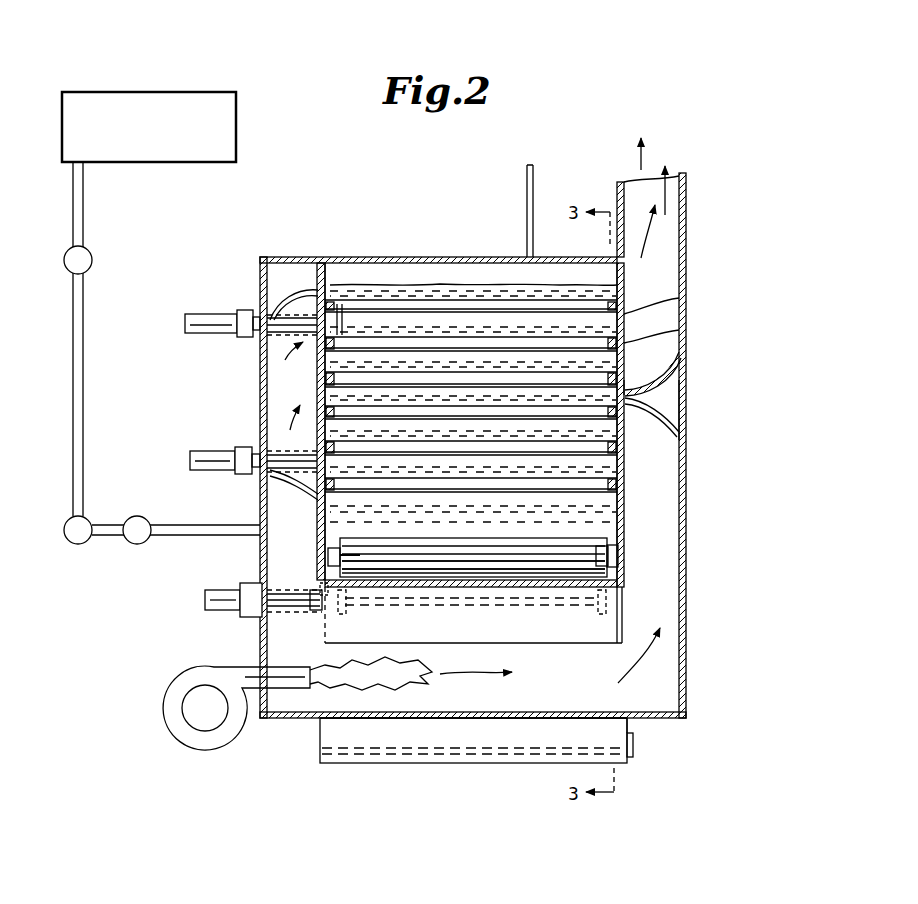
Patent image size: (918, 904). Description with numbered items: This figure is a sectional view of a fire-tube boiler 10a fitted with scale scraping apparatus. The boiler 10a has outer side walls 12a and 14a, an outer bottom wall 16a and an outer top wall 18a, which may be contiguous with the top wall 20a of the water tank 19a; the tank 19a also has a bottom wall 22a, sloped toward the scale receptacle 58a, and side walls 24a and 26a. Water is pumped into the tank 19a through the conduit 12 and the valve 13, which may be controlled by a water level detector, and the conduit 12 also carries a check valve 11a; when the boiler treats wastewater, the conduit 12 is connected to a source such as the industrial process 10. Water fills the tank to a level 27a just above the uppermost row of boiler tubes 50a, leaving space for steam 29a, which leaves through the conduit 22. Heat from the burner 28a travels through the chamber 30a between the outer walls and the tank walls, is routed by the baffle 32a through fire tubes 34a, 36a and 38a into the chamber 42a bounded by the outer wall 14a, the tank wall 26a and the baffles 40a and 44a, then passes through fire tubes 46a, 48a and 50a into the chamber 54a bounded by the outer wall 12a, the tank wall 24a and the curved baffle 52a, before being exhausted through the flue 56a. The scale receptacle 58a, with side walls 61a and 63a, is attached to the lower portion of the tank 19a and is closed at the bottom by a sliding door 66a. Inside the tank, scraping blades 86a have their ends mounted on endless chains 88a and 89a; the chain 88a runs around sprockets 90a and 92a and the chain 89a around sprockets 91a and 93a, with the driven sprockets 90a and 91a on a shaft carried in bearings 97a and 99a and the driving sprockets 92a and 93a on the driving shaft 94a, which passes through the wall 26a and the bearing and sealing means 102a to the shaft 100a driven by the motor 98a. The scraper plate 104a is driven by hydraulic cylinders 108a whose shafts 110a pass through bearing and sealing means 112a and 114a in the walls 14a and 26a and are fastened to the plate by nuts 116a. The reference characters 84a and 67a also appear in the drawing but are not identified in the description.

The industrial process 10 is at (236, 122).
The conduit 12 is at (83, 205).
The valve 13 is at (92, 260).
The check valve 11a is at (135, 544).
The boiler 10a is at (700, 262).
The outer side wall 12a is at (686, 444).
The outer side wall 14a is at (262, 497).
The outer bottom wall 16a is at (450, 712).
The outer top wall 18a is at (277, 257).
The tank 19a is at (470, 262).
The water tank top wall 20a is at (380, 258).
The conduit 22 is at (533, 168).
The bottom wall 22a is at (525, 645).
The side wall 24a is at (621, 503).
The side wall 26a is at (320, 500).
The water level 27a is at (505, 285).
The burner 28a is at (205, 672).
The steam 29a is at (445, 266).
The chamber 30a is at (675, 676).
The baffle 32a is at (686, 410).
The fire tube 34a is at (620, 478).
The fire tube 36a is at (620, 445).
The fire tube 38a is at (652, 420).
The baffle 40a is at (268, 483).
The chamber 42a is at (254, 487).
The baffle 44a is at (283, 300).
The fire tube 46a is at (633, 372).
The fire tube 48a is at (660, 338).
The fire tube 50a is at (660, 304).
The curved baffle 52a is at (685, 378).
The chamber 54a is at (672, 316).
The flue 56a is at (660, 185).
The scale receptacle 58a is at (435, 770).
The side wall 61a is at (318, 728).
The side wall 63a is at (630, 728).
The sliding door 66a is at (455, 749).
The bracket 67a is at (633, 750).
The heat exchanger 84a is at (430, 538).
The scraping blade 86a is at (510, 555).
The endless chain 88a is at (600, 550).
The endless chain 89a is at (370, 518).
The sprocket 90a is at (560, 560).
The sprocket 91a is at (352, 555).
The sprocket 92a is at (598, 615).
The sprocket 93a is at (345, 620).
The driving shaft 94a is at (402, 612).
The bearing 97a is at (612, 552).
The motor 98a is at (215, 592).
The bearing 99a is at (328, 556).
The shaft 100a is at (298, 580).
The bearing and sealing means 102a is at (308, 617).
The scraper plate 104a is at (321, 258).
The hydraulic cylinder 108a is at (205, 456).
The shaft 110a is at (268, 336).
The bearing and sealing means 112a is at (250, 312).
The bearing and sealing means 114a is at (300, 345).
The nut 116a is at (340, 300).